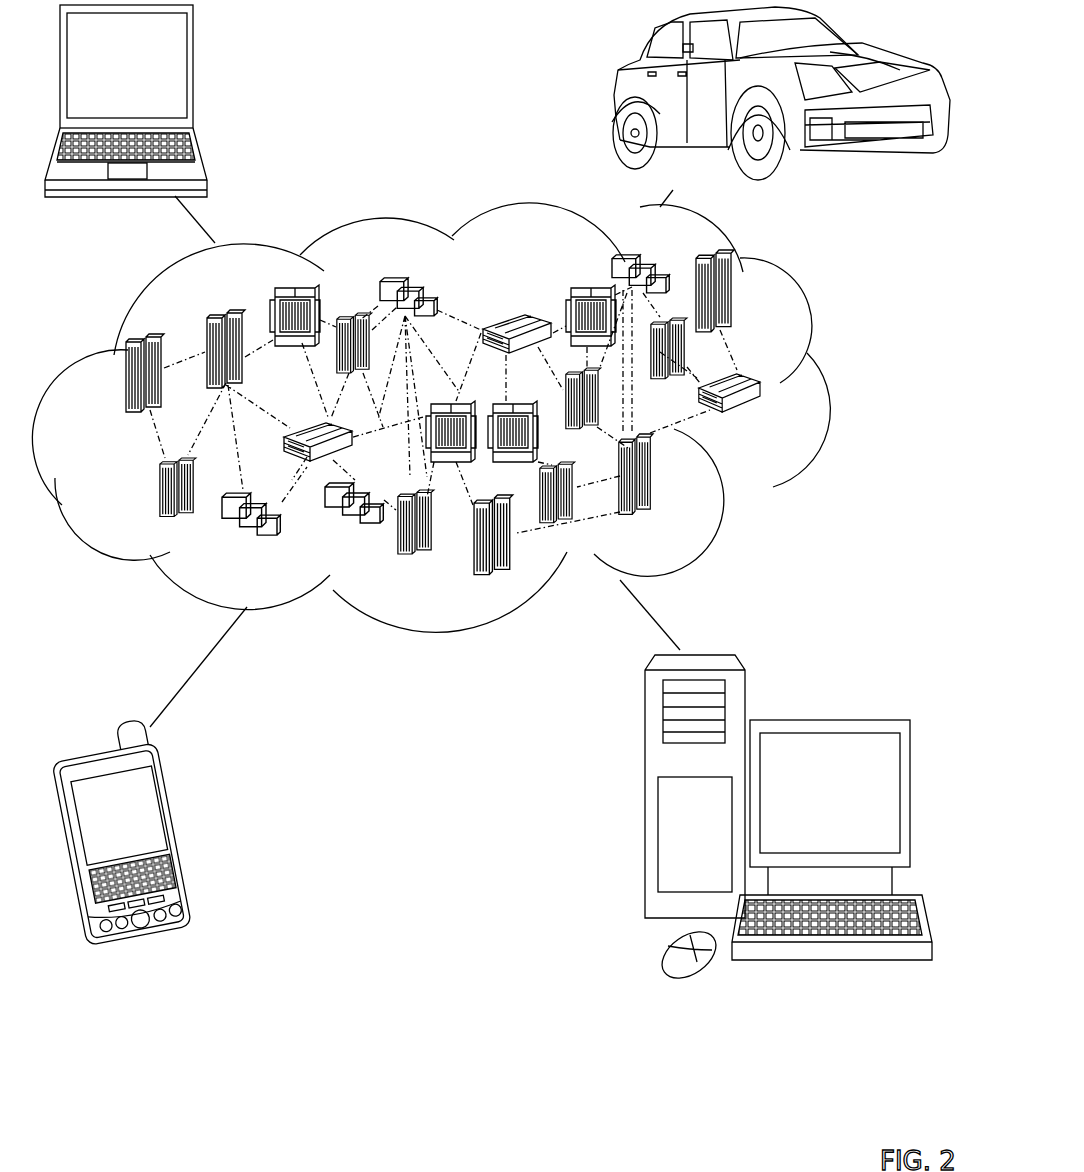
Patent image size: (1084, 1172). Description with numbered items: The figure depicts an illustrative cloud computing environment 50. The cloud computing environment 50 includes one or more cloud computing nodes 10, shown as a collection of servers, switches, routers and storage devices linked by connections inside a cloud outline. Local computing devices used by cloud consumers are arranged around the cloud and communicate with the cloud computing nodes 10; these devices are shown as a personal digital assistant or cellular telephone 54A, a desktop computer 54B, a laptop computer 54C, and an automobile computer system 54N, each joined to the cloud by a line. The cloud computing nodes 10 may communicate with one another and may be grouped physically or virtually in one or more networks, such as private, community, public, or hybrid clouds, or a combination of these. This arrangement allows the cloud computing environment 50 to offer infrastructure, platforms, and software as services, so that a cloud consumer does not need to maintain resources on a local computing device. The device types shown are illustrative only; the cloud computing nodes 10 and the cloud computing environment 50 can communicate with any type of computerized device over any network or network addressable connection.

The cloud computing nodes 10 is at (778, 425).
The cloud computing environment 50 is at (828, 388).
The personal digital assistant or cellular telephone 54A is at (182, 827).
The desktop computer 54B is at (826, 720).
The laptop computer 54C is at (197, 70).
The automobile computer system 54N is at (620, 96).